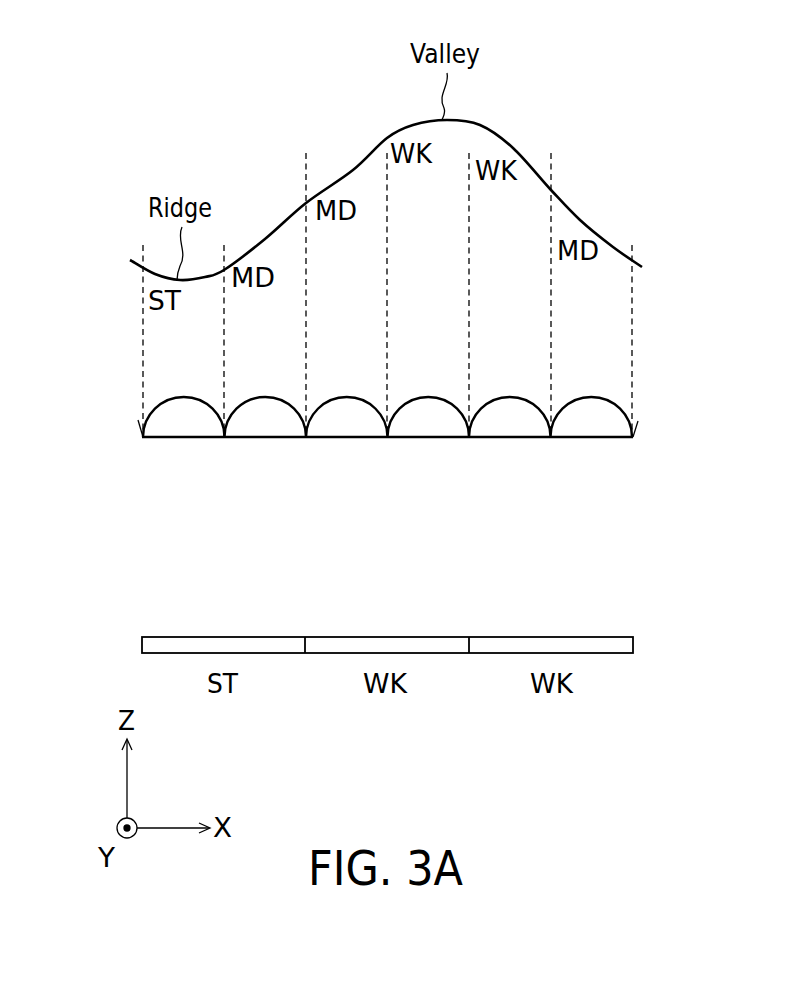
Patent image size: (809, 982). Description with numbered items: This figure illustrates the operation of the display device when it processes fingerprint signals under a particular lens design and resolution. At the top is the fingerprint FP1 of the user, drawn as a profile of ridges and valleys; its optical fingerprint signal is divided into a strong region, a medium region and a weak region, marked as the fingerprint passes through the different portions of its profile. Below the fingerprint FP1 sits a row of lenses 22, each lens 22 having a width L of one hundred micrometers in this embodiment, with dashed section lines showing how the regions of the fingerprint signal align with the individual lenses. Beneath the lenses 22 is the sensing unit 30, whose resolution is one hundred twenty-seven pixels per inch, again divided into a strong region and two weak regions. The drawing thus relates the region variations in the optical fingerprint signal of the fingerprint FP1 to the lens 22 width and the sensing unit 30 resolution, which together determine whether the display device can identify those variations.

The lens 22 is at (600, 427).
The sensing unit 30 is at (590, 645).
The fingerprint FP1 is at (585, 222).